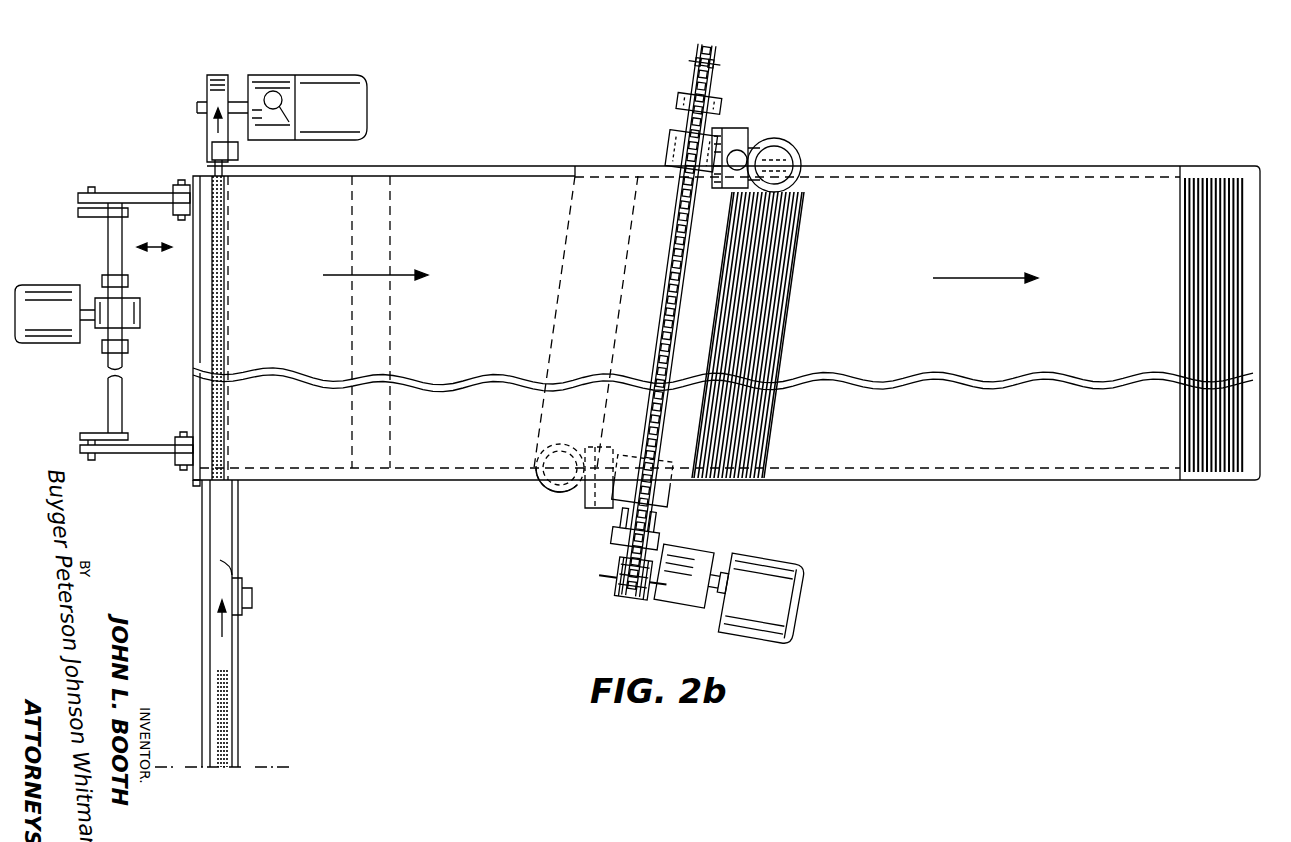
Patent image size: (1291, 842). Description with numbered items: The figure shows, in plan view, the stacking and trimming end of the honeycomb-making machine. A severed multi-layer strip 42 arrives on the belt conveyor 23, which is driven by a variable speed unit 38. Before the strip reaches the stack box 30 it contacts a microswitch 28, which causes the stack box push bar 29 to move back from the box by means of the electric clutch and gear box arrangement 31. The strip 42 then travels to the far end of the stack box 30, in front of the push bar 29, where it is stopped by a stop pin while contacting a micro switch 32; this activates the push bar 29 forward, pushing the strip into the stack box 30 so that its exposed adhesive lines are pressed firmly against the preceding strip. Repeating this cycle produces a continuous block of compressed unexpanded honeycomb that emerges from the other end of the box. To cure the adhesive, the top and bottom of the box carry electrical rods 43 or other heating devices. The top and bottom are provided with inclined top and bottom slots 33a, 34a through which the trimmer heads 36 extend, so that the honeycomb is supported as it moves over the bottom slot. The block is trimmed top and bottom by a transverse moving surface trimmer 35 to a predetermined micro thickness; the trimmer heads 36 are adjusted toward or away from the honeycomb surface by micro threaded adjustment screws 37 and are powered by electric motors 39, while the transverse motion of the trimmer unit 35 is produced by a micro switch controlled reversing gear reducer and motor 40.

The belt conveyor 23 is at (240, 660).
The microswitch 28 is at (256, 598).
The stack box push bar 29 is at (197, 483).
The stack box 30 is at (470, 166).
The electric clutch and gear box arrangement 31 is at (92, 352).
The micro switch 32 is at (240, 150).
The top slot 33a is at (790, 272).
The bottom slot 34a is at (560, 252).
The transverse moving surface trimmer 35 is at (600, 510).
The trimmer head 36 is at (790, 140).
The micro threaded adjustment screw 37 is at (740, 150).
The variable speed unit 38 is at (328, 97).
The electric motor 39 is at (786, 160).
The reversing gear reducer and motor 40 is at (757, 578).
The severed strip 42 is at (225, 243).
The electrical rod 43 is at (1210, 190).